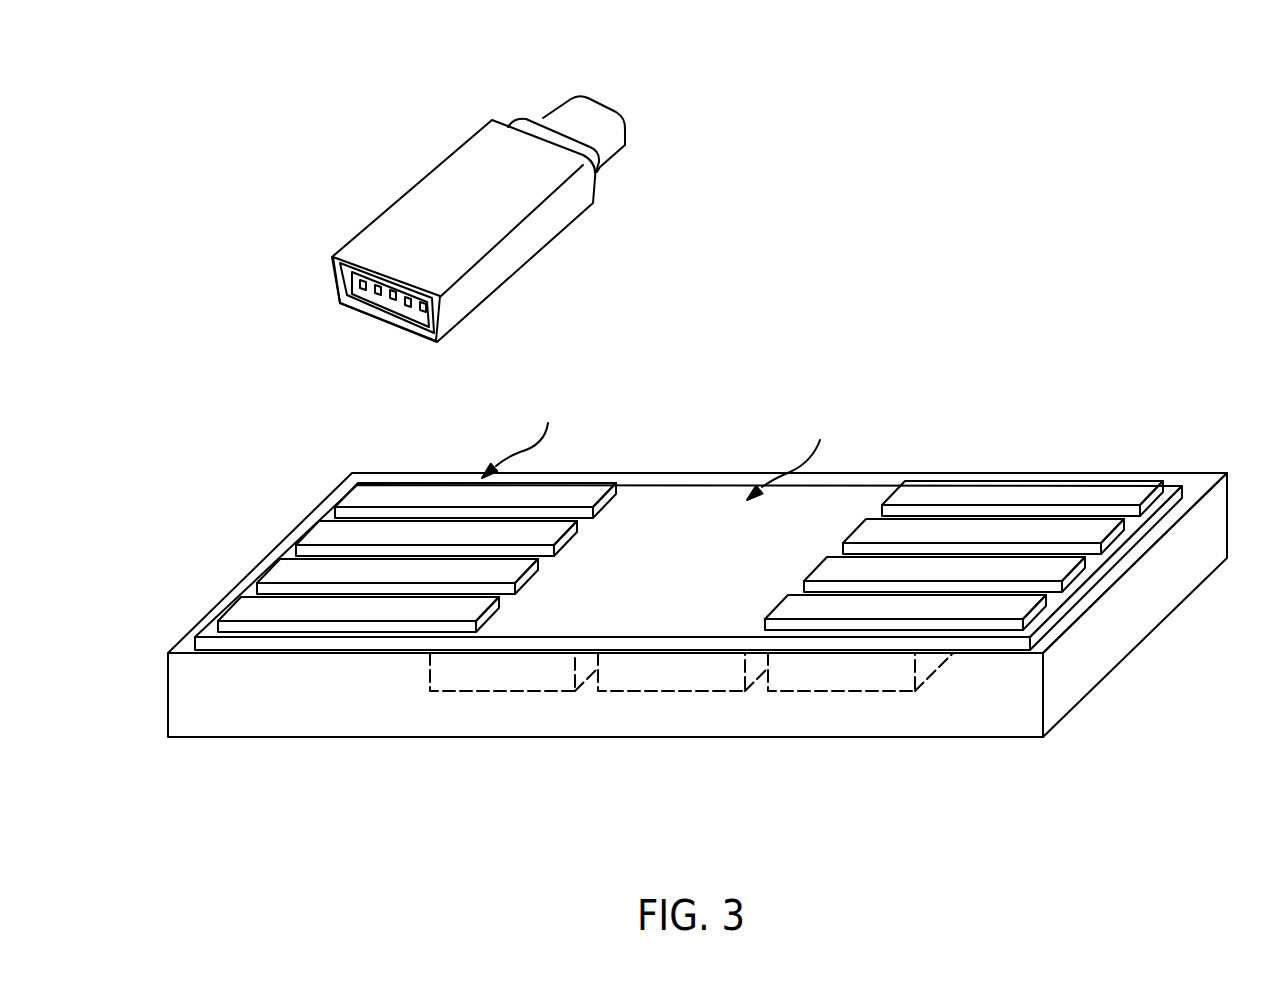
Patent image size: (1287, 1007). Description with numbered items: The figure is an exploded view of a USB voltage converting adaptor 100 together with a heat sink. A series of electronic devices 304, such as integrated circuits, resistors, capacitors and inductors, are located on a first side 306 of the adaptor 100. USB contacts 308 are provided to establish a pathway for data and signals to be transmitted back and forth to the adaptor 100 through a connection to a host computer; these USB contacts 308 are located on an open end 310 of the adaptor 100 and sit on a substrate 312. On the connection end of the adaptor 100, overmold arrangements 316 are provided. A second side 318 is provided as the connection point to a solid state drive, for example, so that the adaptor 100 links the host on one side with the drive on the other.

The USB voltage converting adaptor 100 is at (702, 553).
The electronic devices 304 is at (825, 705).
The first side 306 is at (333, 301).
The USB contacts 308 is at (330, 533).
The open end 310 is at (460, 220).
The substrate 312 is at (1029, 717).
The overmold arrangements 316 is at (1128, 490).
The second side 318 is at (622, 95).